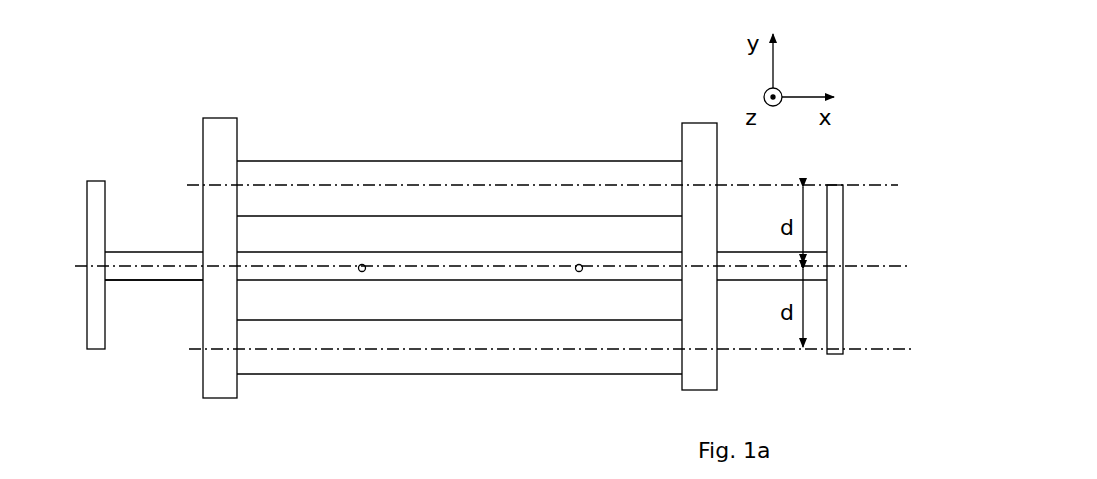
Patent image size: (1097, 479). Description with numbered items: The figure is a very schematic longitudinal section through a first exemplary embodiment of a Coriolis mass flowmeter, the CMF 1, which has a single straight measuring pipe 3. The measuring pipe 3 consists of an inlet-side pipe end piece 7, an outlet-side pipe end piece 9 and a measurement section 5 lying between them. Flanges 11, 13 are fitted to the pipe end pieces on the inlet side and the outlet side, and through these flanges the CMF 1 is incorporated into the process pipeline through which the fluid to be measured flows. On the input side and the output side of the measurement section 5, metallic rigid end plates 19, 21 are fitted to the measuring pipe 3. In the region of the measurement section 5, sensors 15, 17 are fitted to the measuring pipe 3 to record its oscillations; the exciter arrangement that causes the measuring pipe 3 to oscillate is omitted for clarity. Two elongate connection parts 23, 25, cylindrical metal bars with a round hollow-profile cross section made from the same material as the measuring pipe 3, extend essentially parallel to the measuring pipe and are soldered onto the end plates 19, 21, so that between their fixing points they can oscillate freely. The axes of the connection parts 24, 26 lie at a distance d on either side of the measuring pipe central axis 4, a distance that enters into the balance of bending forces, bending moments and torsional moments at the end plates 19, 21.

The CMF 1 is at (504, 469).
The measuring pipe 3 is at (185, 288).
The measuring pipe central axis 4 is at (495, 282).
The measurement section 5 is at (313, 270).
The inlet-side pipe end piece 7 is at (155, 262).
The outlet-side pipe end piece 9 is at (750, 262).
The flange 11 is at (98, 197).
The flange 13 is at (838, 338).
The sensor 15 is at (365, 266).
The sensor 17 is at (577, 265).
The end plate 19 is at (220, 132).
The end plate 21 is at (695, 133).
The first connection part 23 is at (335, 168).
The axis of the connection part 24 is at (884, 184).
The second connection part 25 is at (287, 357).
The axis of the connection part 26 is at (551, 362).